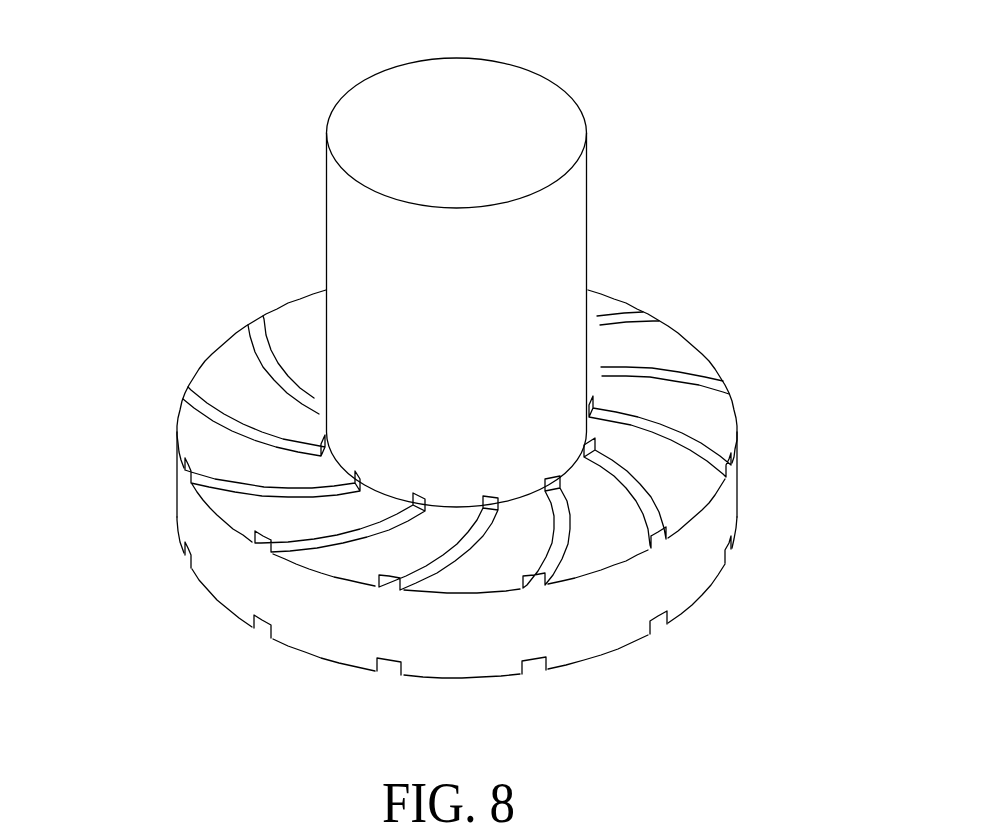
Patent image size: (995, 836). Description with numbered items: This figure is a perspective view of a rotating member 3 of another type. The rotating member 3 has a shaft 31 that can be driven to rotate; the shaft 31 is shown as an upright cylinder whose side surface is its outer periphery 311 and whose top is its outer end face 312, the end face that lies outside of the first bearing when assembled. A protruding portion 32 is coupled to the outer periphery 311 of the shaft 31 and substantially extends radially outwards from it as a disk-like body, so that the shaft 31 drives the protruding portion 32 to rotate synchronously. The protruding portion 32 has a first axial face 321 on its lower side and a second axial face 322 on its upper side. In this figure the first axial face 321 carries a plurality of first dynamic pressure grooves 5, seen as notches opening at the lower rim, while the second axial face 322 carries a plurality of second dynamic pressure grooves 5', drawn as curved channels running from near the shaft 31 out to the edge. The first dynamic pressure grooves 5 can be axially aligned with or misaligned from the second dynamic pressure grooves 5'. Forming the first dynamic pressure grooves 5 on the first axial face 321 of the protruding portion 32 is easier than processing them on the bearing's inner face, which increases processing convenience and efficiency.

The rotating member 3 is at (103, 217).
The shaft 31 is at (252, 243).
The outer periphery 311 is at (570, 212).
The outer end face 312 is at (530, 108).
The protruding portion 32 is at (173, 333).
The first axial face 321 is at (615, 647).
The second axial face 322 is at (685, 500).
The first dynamic pressure grooves 5 is at (410, 624).
The second dynamic pressure grooves 5' is at (499, 451).